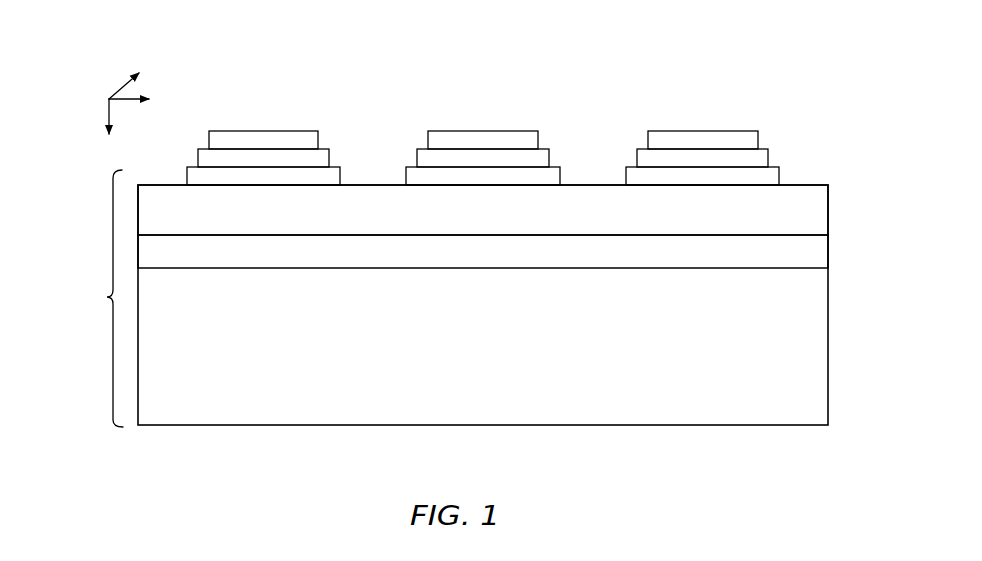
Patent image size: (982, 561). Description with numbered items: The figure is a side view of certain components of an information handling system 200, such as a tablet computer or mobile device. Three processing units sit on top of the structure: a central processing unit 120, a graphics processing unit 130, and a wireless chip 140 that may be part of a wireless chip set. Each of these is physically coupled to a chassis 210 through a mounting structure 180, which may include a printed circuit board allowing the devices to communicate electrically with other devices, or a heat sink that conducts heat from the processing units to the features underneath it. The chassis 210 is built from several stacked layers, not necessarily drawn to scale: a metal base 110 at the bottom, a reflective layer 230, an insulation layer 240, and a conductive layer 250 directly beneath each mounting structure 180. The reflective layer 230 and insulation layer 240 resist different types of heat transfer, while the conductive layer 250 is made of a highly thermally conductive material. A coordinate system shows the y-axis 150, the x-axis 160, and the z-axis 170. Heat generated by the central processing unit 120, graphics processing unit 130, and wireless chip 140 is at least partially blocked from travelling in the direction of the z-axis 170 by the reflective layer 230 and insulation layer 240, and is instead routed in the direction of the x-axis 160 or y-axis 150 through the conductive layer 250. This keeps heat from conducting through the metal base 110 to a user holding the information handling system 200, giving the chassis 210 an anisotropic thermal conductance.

The information handling system 200 is at (781, 59).
The metal base 110 is at (828, 318).
The chassis 210 is at (107, 297).
The reflective layer 230 is at (828, 246).
The insulation layer 240 is at (828, 196).
The conductive layer 250 is at (335, 165).
The mounting structure 180 is at (327, 148).
The central processing unit 120 is at (298, 131).
The graphics processing unit 130 is at (512, 131).
The wireless chip 140 is at (707, 131).
The y-axis 150 is at (118, 90).
The x-axis 160 is at (127, 102).
The z-axis 170 is at (104, 106).